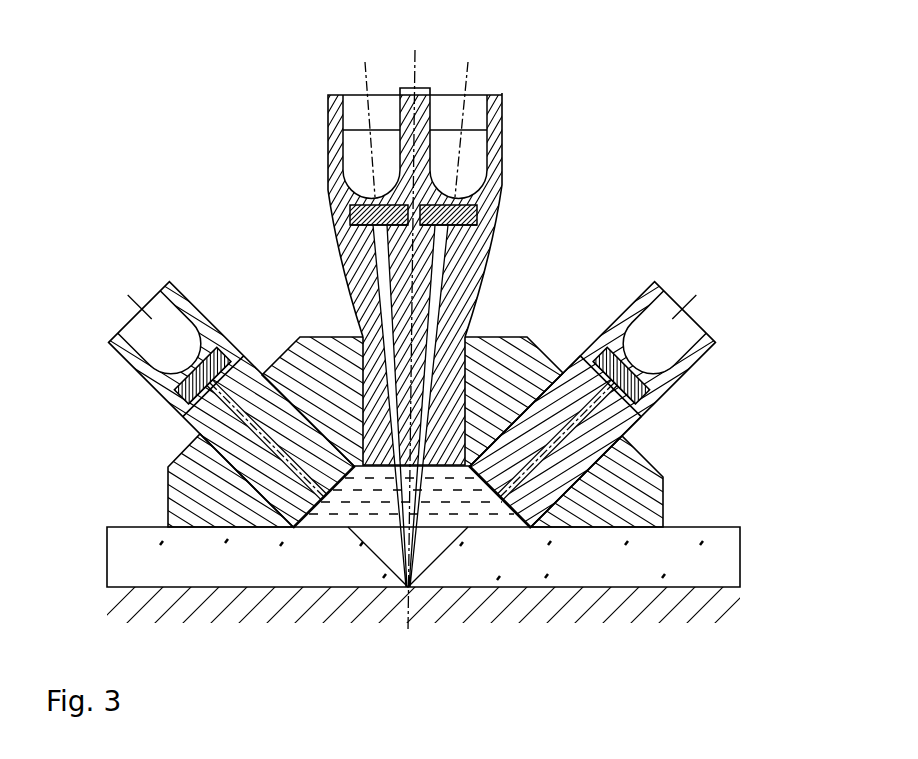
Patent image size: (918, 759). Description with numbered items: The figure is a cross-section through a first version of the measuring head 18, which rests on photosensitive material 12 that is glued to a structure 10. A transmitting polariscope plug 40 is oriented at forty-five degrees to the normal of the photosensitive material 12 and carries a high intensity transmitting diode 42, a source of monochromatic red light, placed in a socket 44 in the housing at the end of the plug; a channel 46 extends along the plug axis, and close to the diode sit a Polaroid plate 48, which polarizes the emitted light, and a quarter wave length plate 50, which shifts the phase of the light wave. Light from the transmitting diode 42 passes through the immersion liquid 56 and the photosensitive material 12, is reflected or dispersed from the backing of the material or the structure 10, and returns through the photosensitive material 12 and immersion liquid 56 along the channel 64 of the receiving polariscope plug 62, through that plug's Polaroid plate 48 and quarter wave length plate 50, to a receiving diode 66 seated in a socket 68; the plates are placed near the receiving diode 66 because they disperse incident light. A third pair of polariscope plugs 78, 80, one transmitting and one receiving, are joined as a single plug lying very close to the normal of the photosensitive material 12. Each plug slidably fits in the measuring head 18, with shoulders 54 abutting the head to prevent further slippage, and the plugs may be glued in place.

The structure 10 is at (726, 607).
The photosensitive material 12 is at (741, 540).
The measuring head 18 is at (527, 337).
The polariscope plug 40 is at (705, 358).
The transmitting diode 42 is at (467, 138).
The socket 44 is at (478, 207).
The channel 46 is at (492, 271).
The Polaroid plate 48 is at (340, 237).
The quarter wave length plate 50 is at (348, 222).
The shoulders 54 is at (192, 436).
The immersion liquid 56 is at (382, 503).
The polariscope plug 62 is at (115, 345).
The channel 64 is at (350, 292).
The receiving diode 66 is at (335, 167).
The socket 68 is at (330, 200).
The polariscope plug 78 is at (500, 160).
The polariscope plug 80 is at (328, 122).